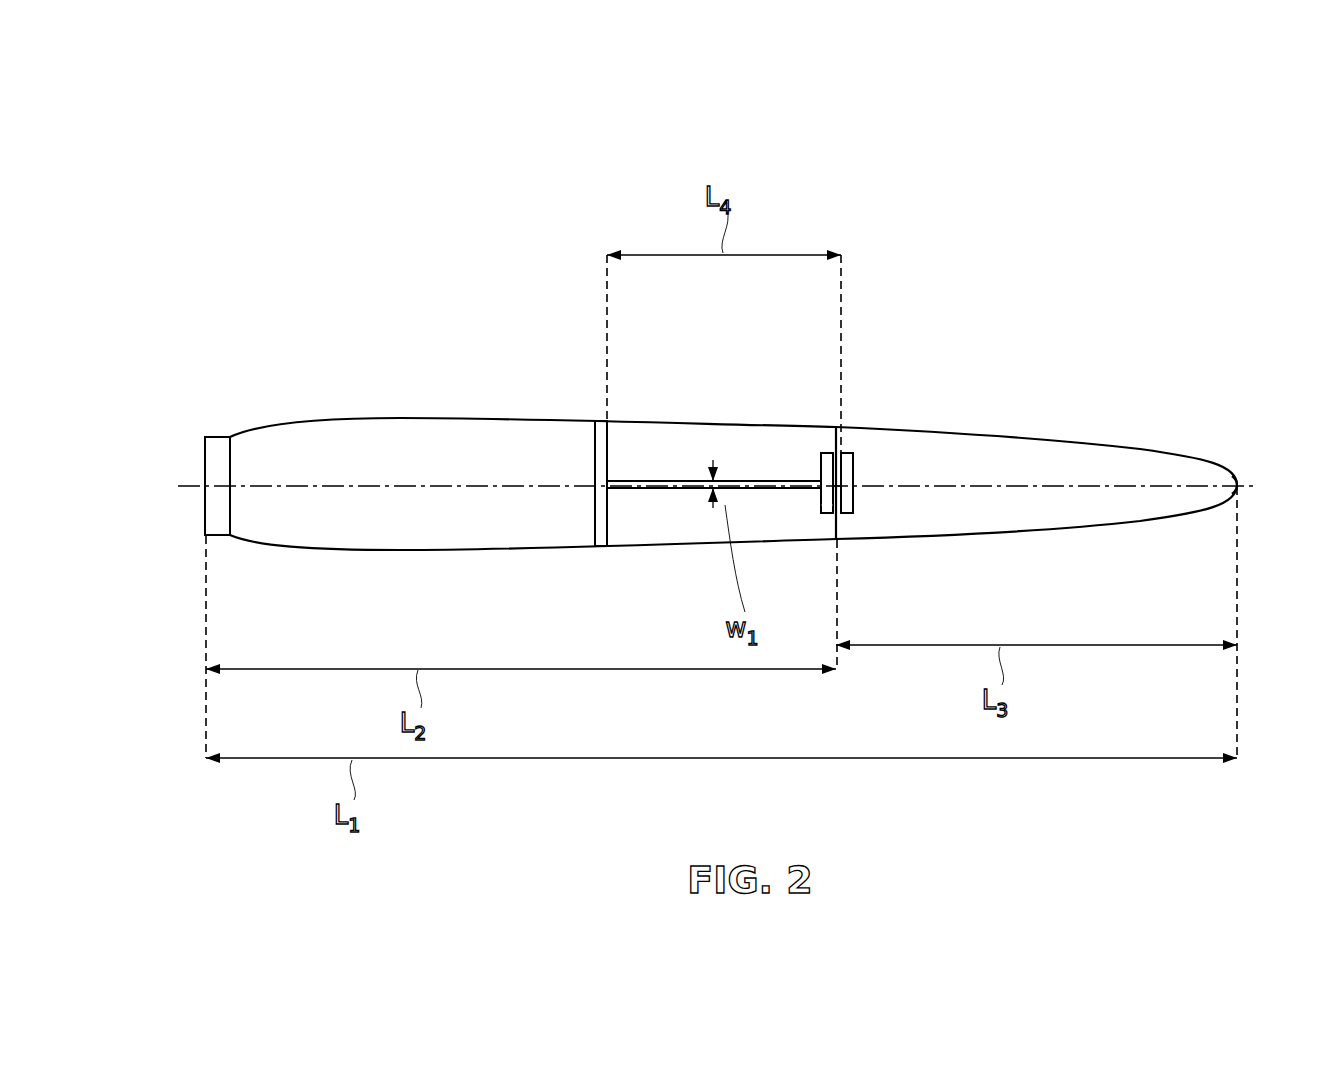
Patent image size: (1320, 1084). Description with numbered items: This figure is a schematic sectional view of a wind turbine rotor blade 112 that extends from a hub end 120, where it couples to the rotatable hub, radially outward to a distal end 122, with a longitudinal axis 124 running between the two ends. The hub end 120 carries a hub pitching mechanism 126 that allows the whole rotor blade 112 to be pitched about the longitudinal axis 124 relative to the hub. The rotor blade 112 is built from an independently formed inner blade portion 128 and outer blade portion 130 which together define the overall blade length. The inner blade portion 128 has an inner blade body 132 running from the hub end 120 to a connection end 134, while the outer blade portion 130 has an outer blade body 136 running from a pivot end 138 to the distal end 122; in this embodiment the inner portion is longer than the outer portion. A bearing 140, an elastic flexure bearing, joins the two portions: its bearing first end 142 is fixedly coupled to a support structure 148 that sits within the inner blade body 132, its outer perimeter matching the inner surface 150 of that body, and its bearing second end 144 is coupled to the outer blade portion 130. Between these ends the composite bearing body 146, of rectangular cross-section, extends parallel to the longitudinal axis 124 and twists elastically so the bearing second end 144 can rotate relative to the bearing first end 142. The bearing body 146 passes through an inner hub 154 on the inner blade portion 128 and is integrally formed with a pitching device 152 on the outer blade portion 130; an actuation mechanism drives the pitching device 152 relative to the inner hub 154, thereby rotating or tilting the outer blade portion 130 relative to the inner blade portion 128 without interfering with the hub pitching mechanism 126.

The rotor blade 112 is at (1020, 160).
The hub end 120 is at (222, 436).
The distal end 122 is at (1240, 470).
The longitudinal axis 124 is at (198, 486).
The hub pitching mechanism 126 is at (210, 517).
The inner blade portion 128 is at (552, 567).
The outer blade portion 130 is at (1008, 405).
The inner blade body 132 is at (347, 418).
The connection end 134 is at (830, 437).
The outer blade body 136 is at (1100, 442).
The pivot end 138 is at (838, 524).
The bearing 140 is at (697, 457).
The bearing first end 142 is at (612, 489).
The bearing second end 144 is at (847, 480).
The bearing body 146 is at (658, 489).
The support structure 148 is at (603, 428).
The inner surface 150 is at (468, 548).
The pitching device 152 is at (852, 488).
The inner hub 154 is at (825, 514).